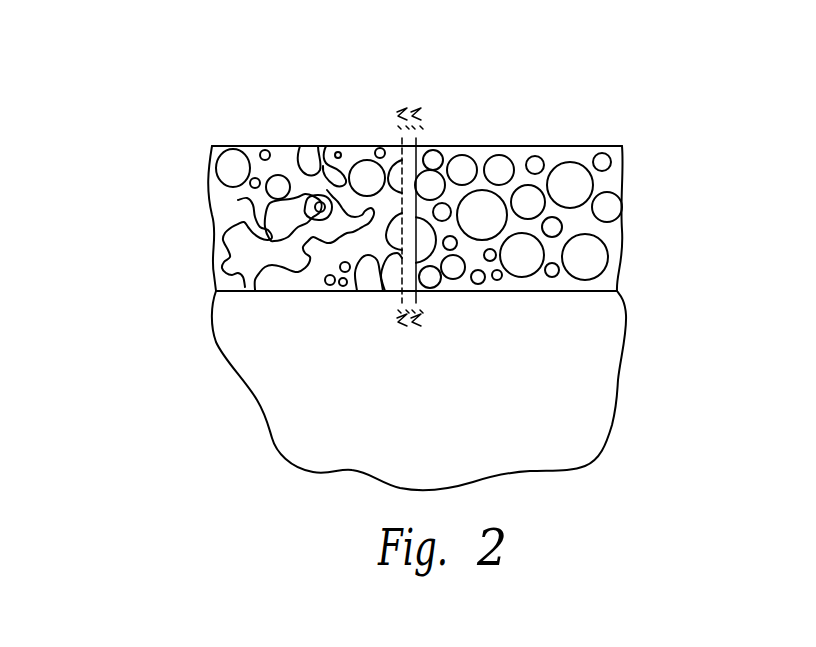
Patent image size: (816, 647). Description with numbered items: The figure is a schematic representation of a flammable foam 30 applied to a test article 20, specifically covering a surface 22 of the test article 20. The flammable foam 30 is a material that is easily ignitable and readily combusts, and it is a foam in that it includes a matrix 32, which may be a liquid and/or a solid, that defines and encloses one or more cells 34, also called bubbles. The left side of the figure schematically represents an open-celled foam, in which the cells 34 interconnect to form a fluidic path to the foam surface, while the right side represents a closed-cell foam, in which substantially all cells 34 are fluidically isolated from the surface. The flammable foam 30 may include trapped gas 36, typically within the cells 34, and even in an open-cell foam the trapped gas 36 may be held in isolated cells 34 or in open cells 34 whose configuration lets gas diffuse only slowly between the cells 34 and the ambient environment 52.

The ambient environment 52 is at (151, 67).
The test article 20 is at (622, 380).
The surface 22 is at (573, 290).
The flammable foam 30 is at (590, 146).
The matrix 32 is at (374, 147).
The cells 34 is at (255, 178).
The trapped gas 36 is at (285, 175).